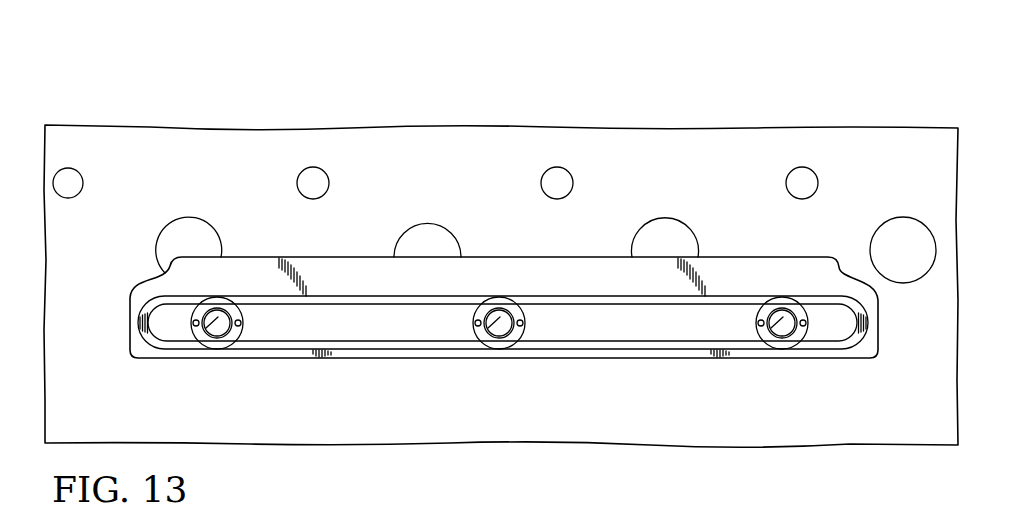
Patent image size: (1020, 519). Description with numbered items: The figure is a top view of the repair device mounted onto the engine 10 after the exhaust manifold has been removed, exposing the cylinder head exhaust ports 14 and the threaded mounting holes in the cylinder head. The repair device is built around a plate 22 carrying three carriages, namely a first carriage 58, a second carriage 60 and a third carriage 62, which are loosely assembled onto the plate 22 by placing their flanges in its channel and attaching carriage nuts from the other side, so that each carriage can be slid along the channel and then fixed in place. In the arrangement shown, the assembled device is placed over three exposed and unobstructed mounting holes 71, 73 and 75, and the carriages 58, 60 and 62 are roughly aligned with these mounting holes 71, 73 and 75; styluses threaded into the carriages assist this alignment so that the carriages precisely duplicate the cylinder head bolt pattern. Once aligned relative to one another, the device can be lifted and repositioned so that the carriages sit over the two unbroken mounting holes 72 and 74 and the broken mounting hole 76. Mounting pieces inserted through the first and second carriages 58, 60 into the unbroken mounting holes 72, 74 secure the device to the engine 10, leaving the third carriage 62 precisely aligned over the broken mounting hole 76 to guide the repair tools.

The engine 10 is at (702, 93).
The cylinder head exhaust port 14 is at (915, 252).
The plate 22 is at (257, 268).
The first carriage 58 is at (231, 335).
The second carriage 60 is at (787, 335).
The third carriage 62 is at (513, 335).
The mounting hole 71 is at (215, 334).
The unbroken mounting hole 72 is at (313, 177).
The mounting hole 73 is at (778, 334).
The unbroken mounting hole 74 is at (802, 177).
The mounting hole 75 is at (497, 334).
The broken mounting hole 76 is at (557, 177).